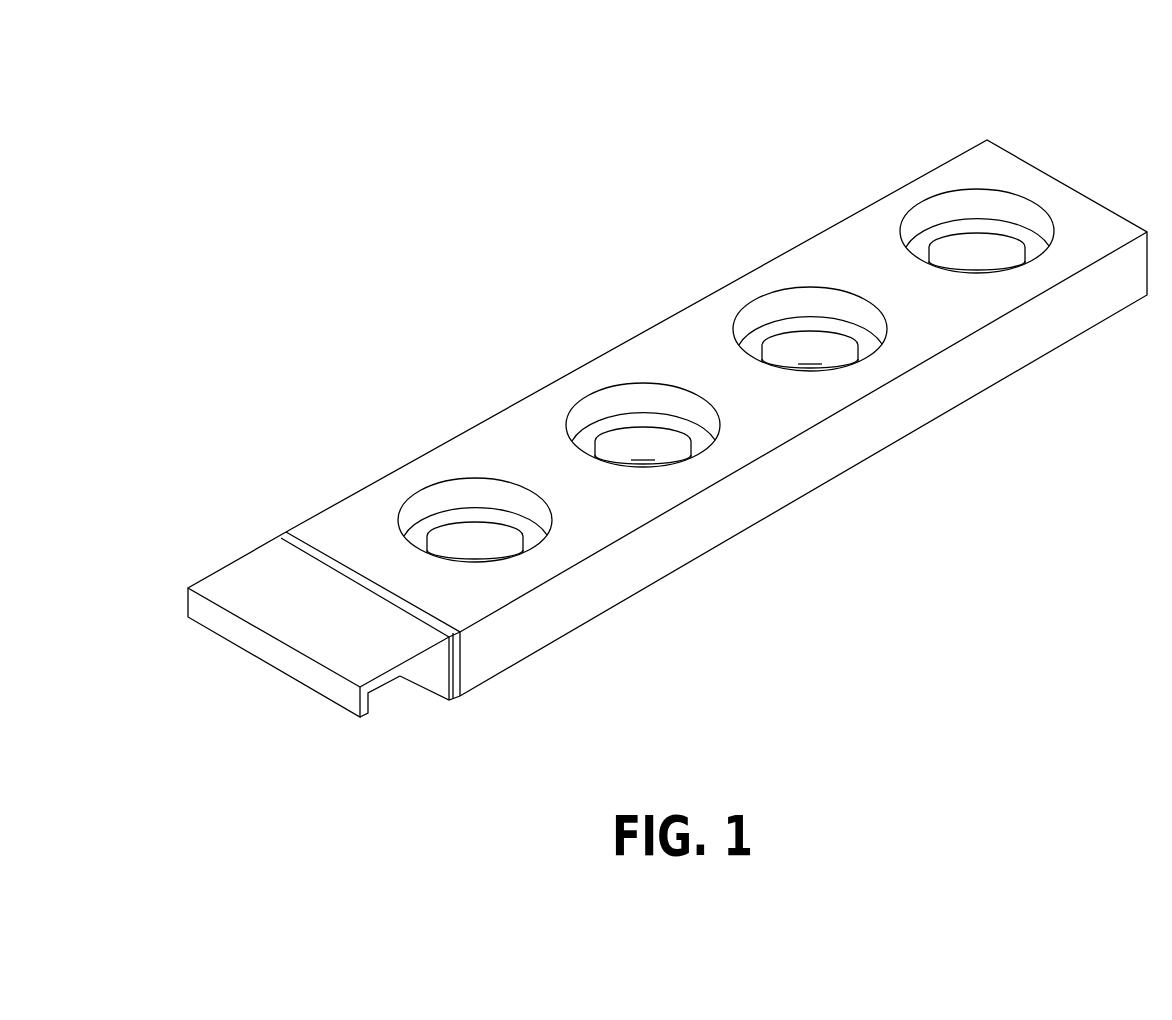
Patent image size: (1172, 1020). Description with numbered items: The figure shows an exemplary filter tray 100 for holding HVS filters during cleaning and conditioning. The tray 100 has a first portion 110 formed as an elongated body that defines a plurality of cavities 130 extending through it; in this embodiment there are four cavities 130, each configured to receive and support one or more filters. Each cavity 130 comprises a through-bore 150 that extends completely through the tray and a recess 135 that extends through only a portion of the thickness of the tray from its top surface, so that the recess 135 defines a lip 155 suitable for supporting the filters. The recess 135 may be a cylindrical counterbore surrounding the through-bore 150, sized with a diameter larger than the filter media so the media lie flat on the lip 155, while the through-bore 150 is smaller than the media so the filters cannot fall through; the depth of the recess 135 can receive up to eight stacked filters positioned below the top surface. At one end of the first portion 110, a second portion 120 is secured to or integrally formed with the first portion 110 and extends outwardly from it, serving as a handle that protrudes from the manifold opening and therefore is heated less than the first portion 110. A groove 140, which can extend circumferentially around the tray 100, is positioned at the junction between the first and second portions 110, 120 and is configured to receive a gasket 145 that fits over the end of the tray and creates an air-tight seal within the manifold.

The filter tray 100 is at (317, 148).
The first portion 110 is at (767, 250).
The second portion 120 is at (228, 563).
The cavity 130 is at (452, 530).
The recess 135 is at (517, 510).
The groove 140 is at (453, 698).
The gasket 145 is at (453, 652).
The through-bore 150 is at (638, 447).
The lip 155 is at (693, 432).